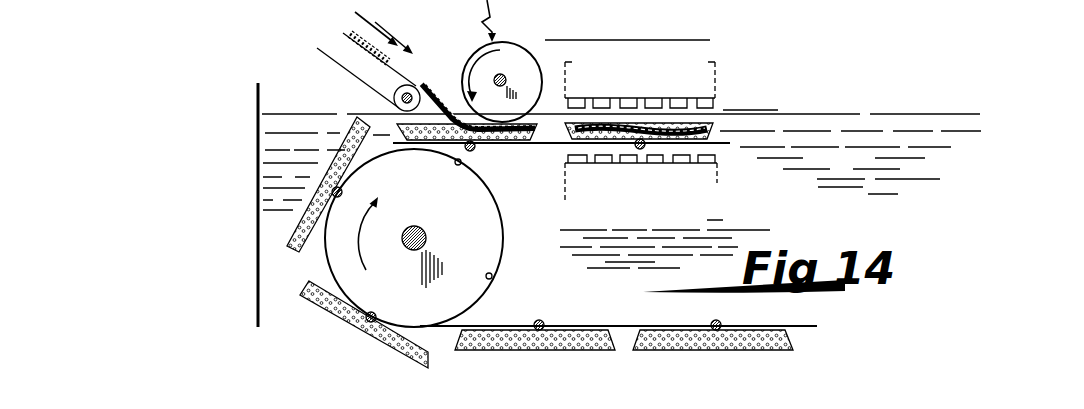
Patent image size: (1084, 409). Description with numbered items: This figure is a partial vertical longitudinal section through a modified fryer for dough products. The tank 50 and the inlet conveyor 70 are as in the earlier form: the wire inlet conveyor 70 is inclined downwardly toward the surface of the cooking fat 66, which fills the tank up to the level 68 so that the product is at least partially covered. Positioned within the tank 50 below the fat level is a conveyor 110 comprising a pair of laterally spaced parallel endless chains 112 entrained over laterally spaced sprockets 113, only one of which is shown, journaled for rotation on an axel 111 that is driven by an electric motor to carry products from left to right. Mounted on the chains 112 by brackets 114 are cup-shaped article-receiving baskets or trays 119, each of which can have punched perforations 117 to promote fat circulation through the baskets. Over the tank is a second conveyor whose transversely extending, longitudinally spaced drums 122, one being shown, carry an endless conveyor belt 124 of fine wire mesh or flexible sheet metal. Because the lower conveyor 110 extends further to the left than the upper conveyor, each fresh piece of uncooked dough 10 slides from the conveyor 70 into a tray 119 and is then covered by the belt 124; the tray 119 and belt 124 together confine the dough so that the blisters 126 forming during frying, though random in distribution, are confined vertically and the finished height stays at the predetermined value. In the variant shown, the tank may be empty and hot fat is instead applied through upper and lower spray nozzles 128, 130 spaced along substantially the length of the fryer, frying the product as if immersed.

The uncooked dough 10 is at (442, 80).
The tank 50 is at (242, 172).
The fat 66 is at (942, 186).
The level 68 is at (295, 114).
The inlet conveyor 70 is at (322, 52).
The conveyor 110 is at (504, 318).
The axel 111 is at (411, 226).
The endless chains 112 is at (790, 327).
The sprockets 113 is at (502, 232).
The brackets 114 is at (374, 314).
The punched perforations 117 is at (438, 148).
The trays 119 is at (545, 158).
The drums 122 is at (524, 60).
The endless conveyor belt 124 is at (688, 39).
The blisters 126 is at (655, 117).
The upper spray nozzles 128 is at (716, 62).
The lower spray nozzles 130 is at (717, 183).